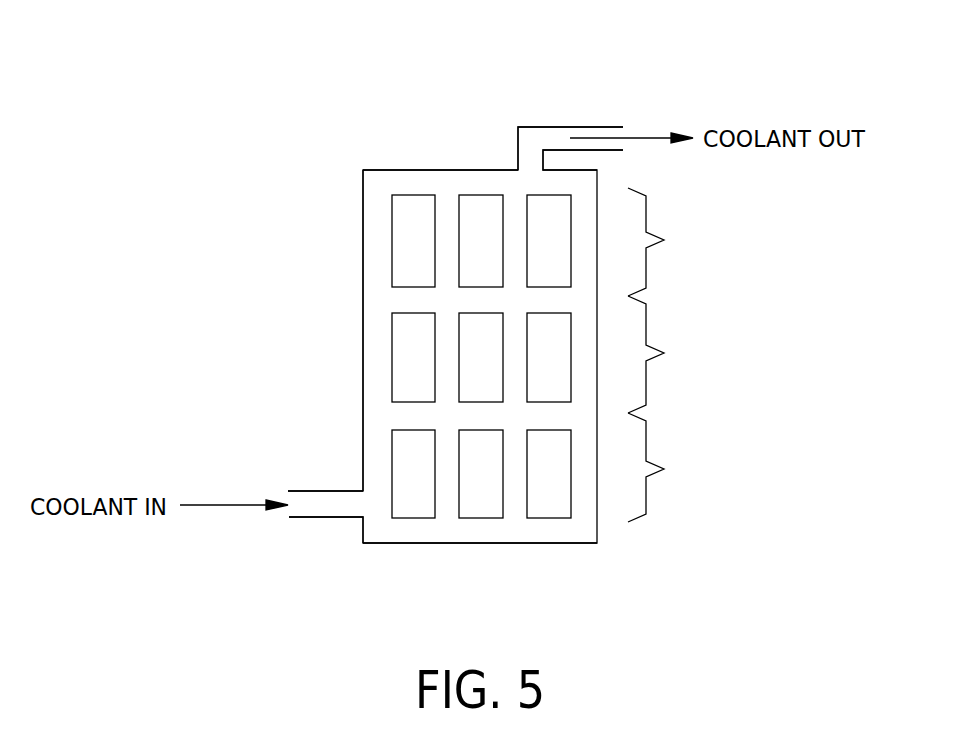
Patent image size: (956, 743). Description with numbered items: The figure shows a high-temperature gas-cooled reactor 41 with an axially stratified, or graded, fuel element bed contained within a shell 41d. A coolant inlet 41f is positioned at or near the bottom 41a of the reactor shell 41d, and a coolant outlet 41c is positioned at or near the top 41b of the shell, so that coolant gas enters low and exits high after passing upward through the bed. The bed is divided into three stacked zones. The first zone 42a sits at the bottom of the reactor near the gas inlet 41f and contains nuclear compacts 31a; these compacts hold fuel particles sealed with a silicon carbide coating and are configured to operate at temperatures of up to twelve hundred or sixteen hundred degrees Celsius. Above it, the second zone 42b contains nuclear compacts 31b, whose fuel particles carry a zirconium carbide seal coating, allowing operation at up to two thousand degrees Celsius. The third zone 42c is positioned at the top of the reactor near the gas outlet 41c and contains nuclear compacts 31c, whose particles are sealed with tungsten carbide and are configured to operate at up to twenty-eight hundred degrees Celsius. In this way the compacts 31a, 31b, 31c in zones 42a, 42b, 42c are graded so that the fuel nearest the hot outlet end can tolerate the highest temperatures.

The reactor 41 is at (272, 276).
The bottom of the reactor shell 41a is at (571, 543).
The top of the reactor shell 41b is at (407, 170).
The coolant outlet 41c is at (558, 127).
The shell 41d is at (363, 178).
The coolant inlet 41f is at (342, 518).
The nuclear compacts 31a is at (392, 437).
The nuclear compacts 31b is at (392, 352).
The nuclear compacts 31c is at (392, 230).
The first zone 42a is at (675, 467).
The second zone 42b is at (675, 354).
The third zone 42c is at (675, 242).